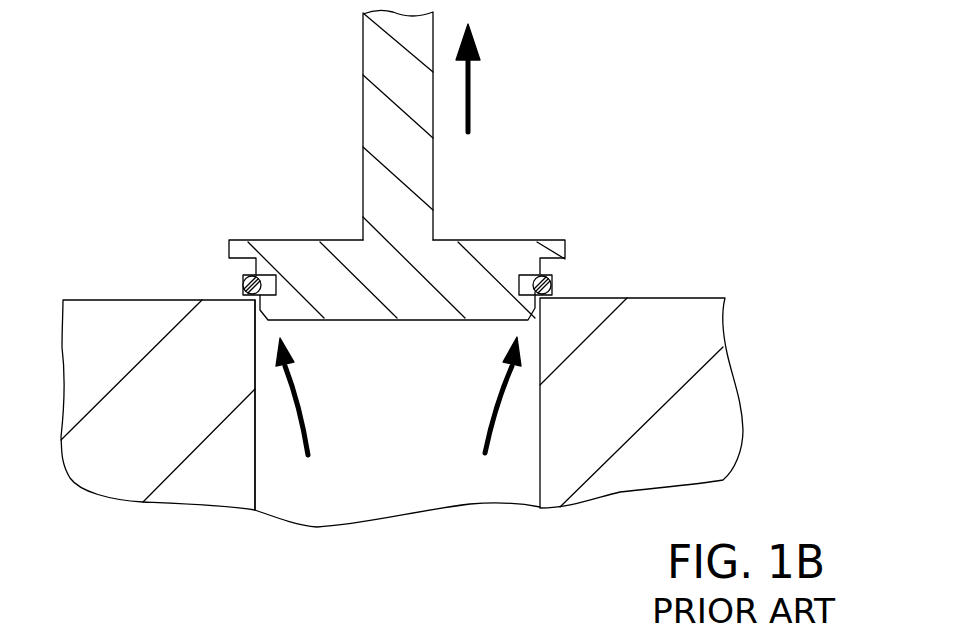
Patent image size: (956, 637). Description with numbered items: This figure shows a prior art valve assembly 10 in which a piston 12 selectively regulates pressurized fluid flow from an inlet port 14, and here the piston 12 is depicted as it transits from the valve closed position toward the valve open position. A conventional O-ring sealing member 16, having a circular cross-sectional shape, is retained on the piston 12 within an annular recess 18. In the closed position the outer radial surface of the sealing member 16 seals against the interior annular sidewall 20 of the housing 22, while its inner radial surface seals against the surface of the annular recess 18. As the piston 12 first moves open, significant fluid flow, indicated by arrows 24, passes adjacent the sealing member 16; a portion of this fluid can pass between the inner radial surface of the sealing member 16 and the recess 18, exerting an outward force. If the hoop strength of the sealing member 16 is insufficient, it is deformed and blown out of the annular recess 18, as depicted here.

The prior art valve assembly 10 is at (262, 78).
The piston 12 is at (363, 135).
The inlet port 14 is at (393, 497).
The O-ring sealing member 16 is at (552, 283).
The annular recess 18 is at (265, 276).
The interior annular sidewall 20 is at (257, 450).
The housing 22 is at (682, 312).
The fluid flow arrows 24 is at (490, 406).